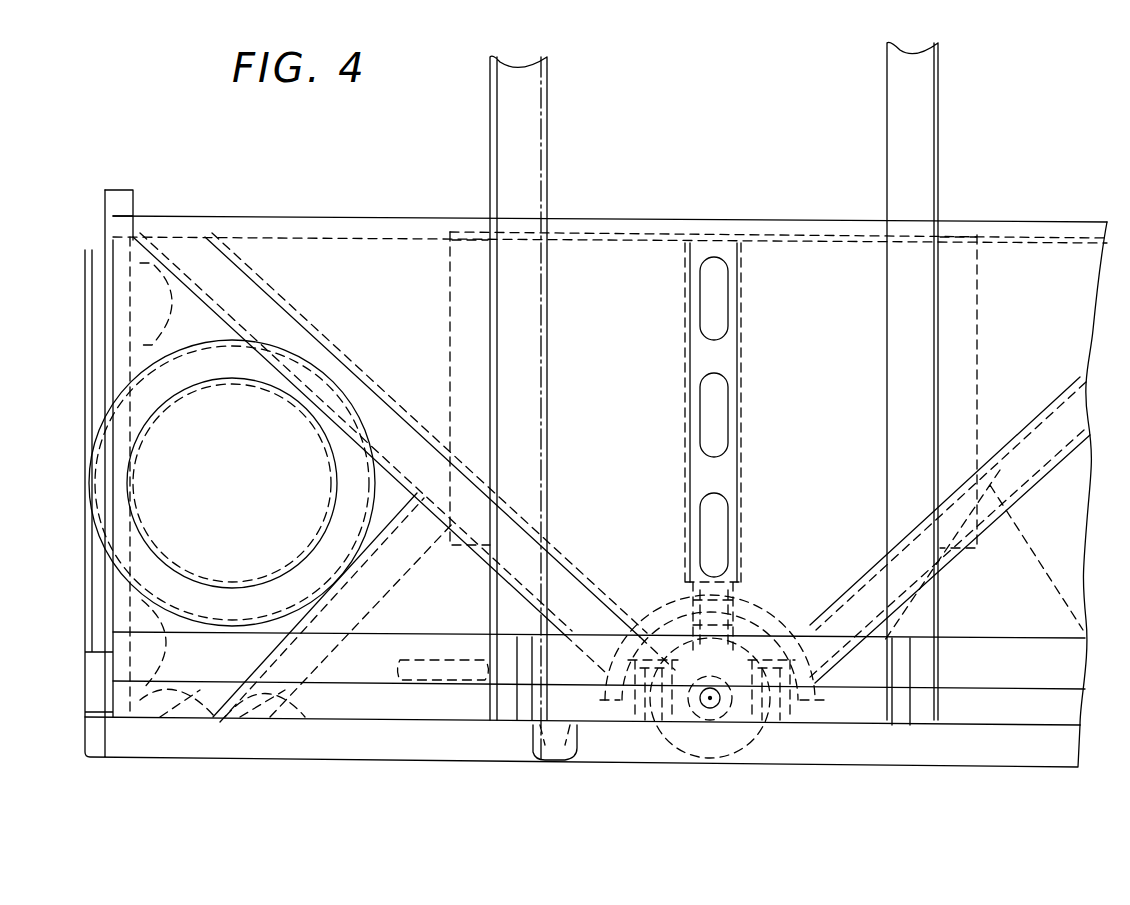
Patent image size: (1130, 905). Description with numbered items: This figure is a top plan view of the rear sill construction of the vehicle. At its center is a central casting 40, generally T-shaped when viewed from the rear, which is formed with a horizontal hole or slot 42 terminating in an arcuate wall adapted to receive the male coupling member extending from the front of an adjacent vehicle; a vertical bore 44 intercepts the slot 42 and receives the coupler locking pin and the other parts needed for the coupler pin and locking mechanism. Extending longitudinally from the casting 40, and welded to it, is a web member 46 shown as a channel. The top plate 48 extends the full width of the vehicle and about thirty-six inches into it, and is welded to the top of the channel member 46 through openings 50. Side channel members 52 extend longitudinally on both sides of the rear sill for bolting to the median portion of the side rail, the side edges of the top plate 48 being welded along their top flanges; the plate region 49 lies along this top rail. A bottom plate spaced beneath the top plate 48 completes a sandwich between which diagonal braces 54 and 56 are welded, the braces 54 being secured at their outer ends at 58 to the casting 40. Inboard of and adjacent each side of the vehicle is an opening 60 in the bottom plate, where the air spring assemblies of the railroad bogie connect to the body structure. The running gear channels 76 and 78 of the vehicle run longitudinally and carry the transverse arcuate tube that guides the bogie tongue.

The central casting 40 is at (545, 758).
The horizontal slot 42 is at (765, 622).
The vertical bore 44 is at (725, 735).
The web member 46 is at (742, 525).
The top plate 48 is at (652, 250).
The top rail 49 is at (357, 237).
The openings 50 is at (740, 400).
The side channel members 52 is at (135, 190).
The diagonal braces 54 is at (280, 284).
The diagonal braces 56 is at (385, 583).
The brace attachment 58 is at (636, 625).
The opening 60 is at (336, 502).
The running gear channel 76 is at (888, 275).
The running gear channel 78 is at (546, 405).